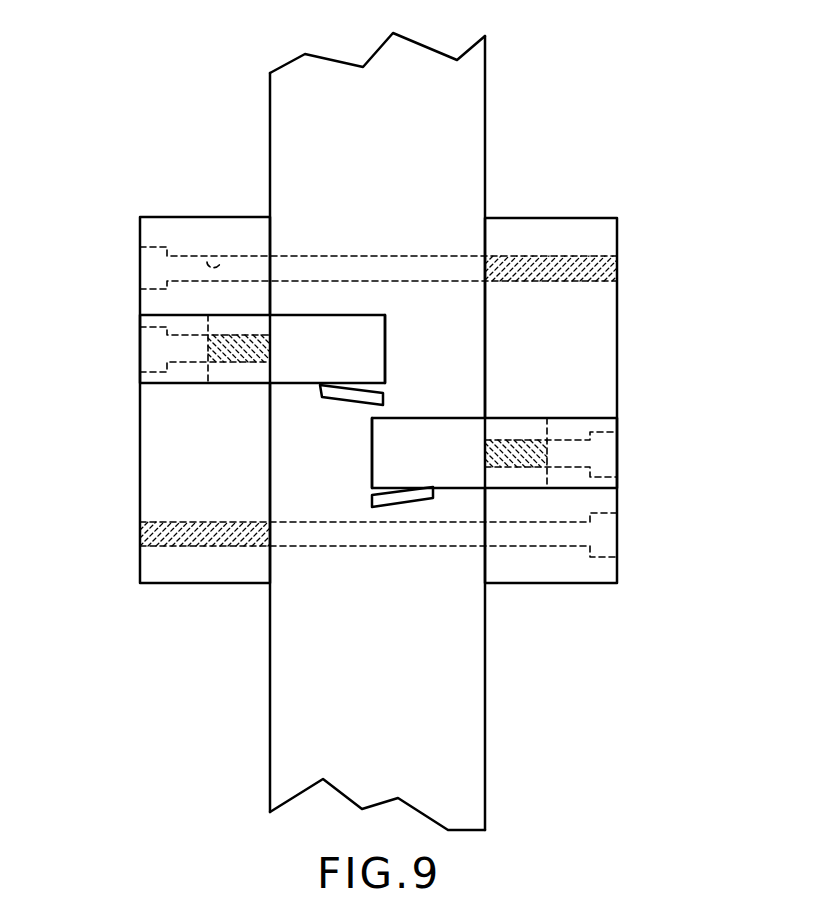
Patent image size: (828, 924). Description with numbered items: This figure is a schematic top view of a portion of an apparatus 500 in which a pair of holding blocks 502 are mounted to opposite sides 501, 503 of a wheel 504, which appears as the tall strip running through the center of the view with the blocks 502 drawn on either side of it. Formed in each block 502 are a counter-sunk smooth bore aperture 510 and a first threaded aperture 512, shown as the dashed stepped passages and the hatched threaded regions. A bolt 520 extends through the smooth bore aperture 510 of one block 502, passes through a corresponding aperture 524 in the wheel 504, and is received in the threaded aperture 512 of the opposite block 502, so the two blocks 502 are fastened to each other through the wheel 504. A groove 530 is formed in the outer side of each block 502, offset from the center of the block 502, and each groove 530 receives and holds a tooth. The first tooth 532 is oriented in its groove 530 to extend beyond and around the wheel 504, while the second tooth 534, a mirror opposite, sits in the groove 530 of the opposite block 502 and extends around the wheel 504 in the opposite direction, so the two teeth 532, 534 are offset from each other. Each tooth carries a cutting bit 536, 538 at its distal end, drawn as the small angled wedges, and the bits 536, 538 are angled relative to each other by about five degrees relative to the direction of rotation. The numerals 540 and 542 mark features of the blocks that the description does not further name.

The apparatus 500 is at (134, 138).
The side of wheel 501 is at (266, 696).
The holding block 502 is at (140, 448).
The side of wheel 503 is at (489, 676).
The wheel 504 is at (485, 722).
The smooth bore aperture 510 is at (222, 256).
The first threaded aperture 512 is at (617, 270).
The bolt 520 is at (140, 275).
The aperture in wheel 524 is at (390, 262).
The groove 530 is at (140, 383).
The first tooth 532 is at (372, 440).
The second tooth 534 is at (385, 343).
The cutting bit 536 is at (385, 404).
The cutting bit 538 is at (372, 508).
The blocks 540 is at (140, 342).
The block retention region 542 is at (244, 366).